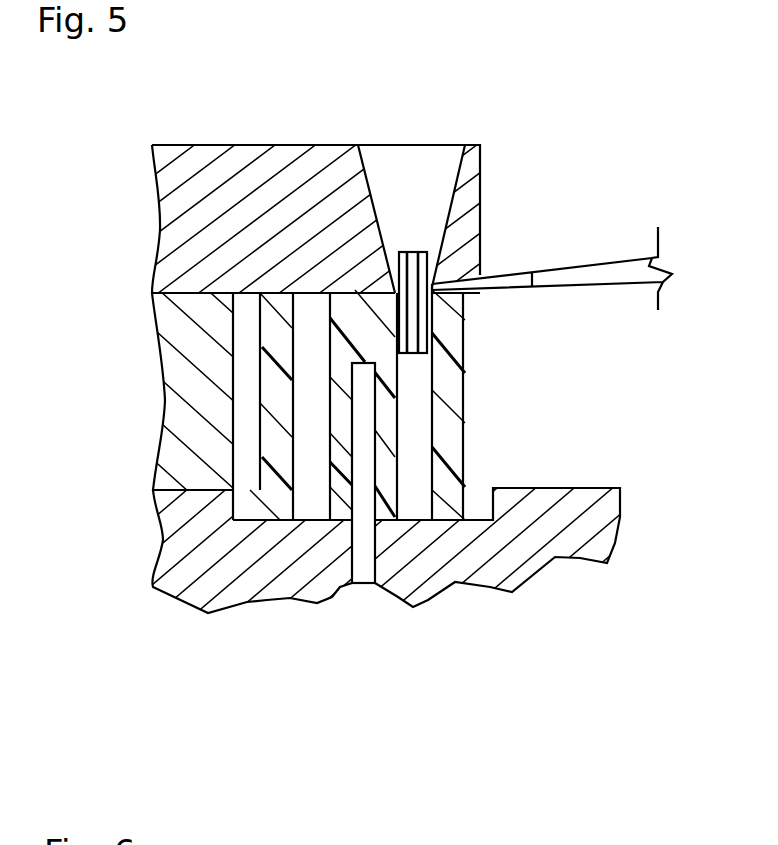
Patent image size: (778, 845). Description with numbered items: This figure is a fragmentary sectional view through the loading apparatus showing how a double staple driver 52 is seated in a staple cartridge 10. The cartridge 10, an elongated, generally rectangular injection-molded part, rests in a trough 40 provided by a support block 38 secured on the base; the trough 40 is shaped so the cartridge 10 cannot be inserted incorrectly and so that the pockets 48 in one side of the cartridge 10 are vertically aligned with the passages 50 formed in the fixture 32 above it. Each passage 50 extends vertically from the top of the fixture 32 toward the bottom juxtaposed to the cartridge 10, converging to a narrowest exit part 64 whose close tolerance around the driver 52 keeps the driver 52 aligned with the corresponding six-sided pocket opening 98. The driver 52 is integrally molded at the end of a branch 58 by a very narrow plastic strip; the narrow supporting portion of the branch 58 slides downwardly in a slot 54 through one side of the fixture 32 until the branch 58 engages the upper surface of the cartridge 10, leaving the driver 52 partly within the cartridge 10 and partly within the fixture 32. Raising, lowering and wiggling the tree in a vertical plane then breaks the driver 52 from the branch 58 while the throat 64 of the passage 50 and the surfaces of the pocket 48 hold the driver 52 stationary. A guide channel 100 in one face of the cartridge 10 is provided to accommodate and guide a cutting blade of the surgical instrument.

The cartridge 10 is at (277, 293).
The fixture 32 is at (312, 144).
The support block 38 is at (592, 488).
The trough 40 is at (233, 436).
The pockets 48 is at (330, 422).
The passages 50 is at (408, 173).
The double staple driver 52 is at (414, 250).
The slots 54 is at (485, 160).
The branches 58 is at (590, 255).
The narrowest part of passage 64 is at (458, 262).
The pocket opening 98 is at (440, 293).
The guide channel 100 is at (362, 502).